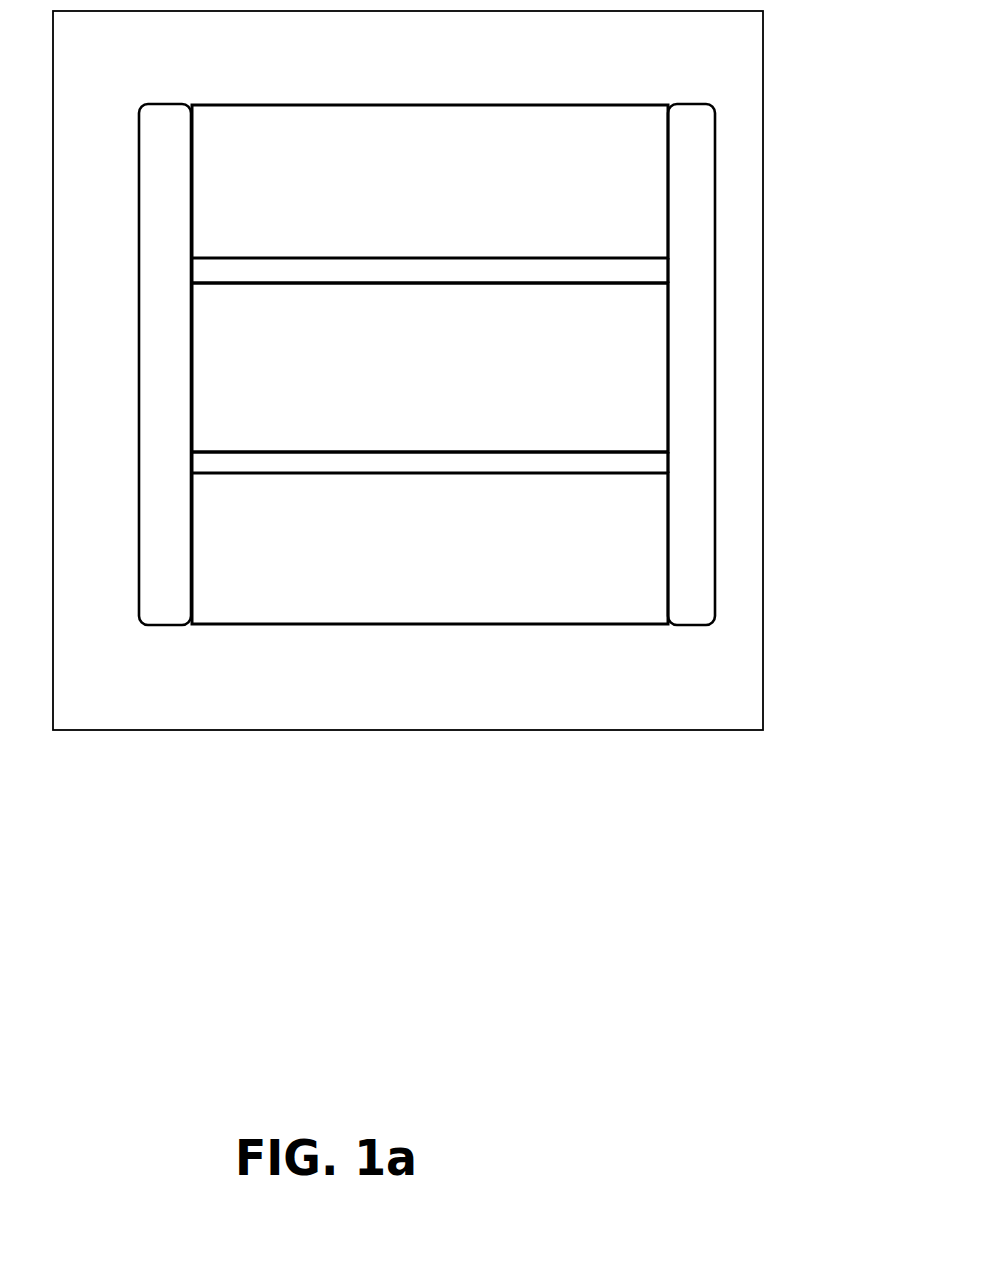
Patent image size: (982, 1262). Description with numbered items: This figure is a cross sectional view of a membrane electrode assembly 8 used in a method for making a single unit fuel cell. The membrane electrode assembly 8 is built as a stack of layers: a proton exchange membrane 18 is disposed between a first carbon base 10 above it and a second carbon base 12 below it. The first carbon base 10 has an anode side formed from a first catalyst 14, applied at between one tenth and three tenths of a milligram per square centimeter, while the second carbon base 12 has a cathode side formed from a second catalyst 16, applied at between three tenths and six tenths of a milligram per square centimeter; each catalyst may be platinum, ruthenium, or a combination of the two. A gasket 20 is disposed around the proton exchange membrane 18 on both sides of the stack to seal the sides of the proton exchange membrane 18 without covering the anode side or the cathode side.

The membrane electrode assembly 8 is at (132, 730).
The first carbon base 10 is at (313, 183).
The second carbon base 12 is at (305, 523).
The first catalyst 14 is at (558, 270).
The second catalyst 16 is at (507, 469).
The proton exchange membrane 18 is at (318, 351).
The gasket 20 is at (167, 567).